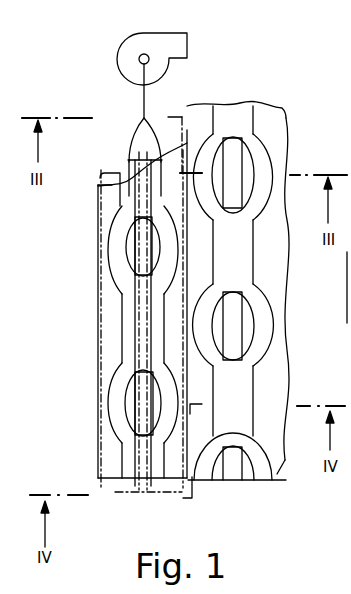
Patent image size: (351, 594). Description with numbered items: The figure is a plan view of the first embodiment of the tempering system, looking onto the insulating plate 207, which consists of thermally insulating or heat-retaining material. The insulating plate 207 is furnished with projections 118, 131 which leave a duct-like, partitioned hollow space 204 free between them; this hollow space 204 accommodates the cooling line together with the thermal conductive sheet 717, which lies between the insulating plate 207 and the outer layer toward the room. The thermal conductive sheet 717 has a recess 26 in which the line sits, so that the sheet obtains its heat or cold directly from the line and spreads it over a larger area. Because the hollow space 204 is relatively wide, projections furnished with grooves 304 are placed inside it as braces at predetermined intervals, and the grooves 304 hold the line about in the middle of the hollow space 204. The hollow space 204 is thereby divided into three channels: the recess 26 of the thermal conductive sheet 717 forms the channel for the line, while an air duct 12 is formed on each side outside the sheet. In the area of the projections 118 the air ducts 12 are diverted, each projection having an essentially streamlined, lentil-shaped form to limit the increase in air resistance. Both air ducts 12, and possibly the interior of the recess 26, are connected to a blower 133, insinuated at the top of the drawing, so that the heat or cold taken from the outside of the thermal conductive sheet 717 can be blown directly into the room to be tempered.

The blower 133 is at (183, 38).
The insulating plate 207 is at (264, 121).
The air duct 12 is at (113, 248).
The recess 26 is at (140, 337).
The hollow space 204 is at (243, 248).
The groove 304 is at (235, 327).
The projection 118 is at (248, 472).
The projection 131 is at (283, 470).
The thermal conductive sheet 717 is at (108, 488).